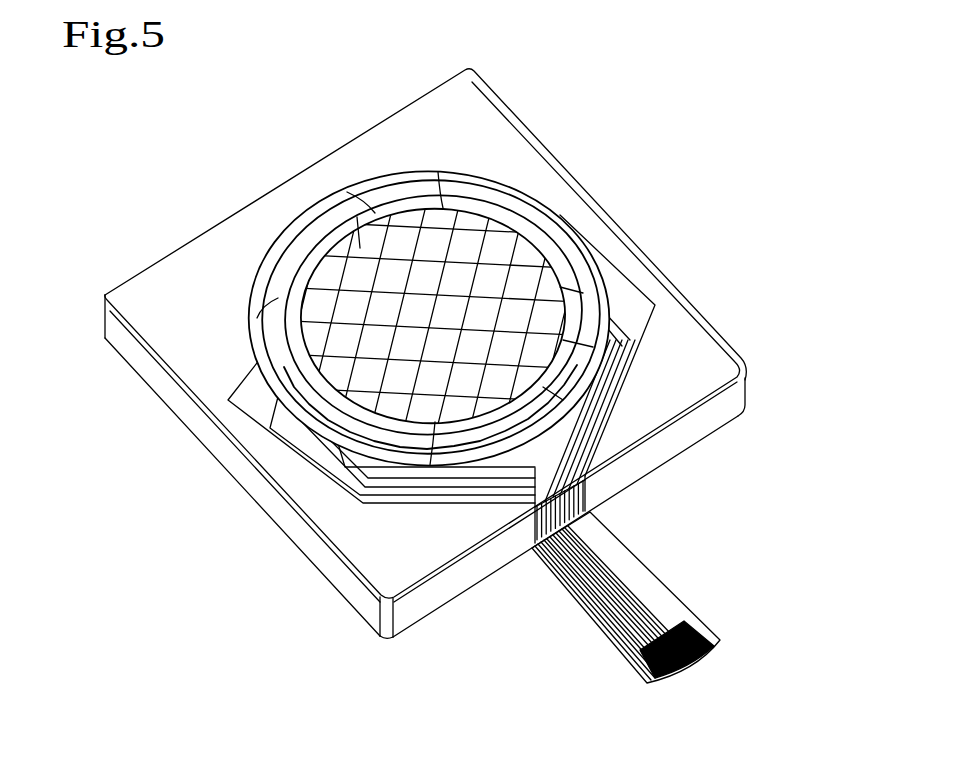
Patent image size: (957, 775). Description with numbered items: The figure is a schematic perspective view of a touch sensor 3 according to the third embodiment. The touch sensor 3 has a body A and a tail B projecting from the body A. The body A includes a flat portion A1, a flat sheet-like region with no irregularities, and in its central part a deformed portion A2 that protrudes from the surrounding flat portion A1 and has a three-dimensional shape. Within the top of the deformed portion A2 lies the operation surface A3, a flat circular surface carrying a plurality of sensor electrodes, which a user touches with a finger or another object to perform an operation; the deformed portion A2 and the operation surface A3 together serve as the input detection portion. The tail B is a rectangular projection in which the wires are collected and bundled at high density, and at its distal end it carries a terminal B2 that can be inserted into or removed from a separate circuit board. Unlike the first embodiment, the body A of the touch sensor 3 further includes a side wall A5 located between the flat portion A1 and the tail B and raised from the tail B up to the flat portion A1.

The touch sensor 3 is at (615, 150).
The body A is at (668, 276).
The flat portion A1 is at (444, 112).
The deformed portion A2 is at (283, 252).
The operation surface A3 is at (322, 193).
The side wall A5 is at (235, 462).
The tail B is at (667, 583).
The terminal B2 is at (693, 658).